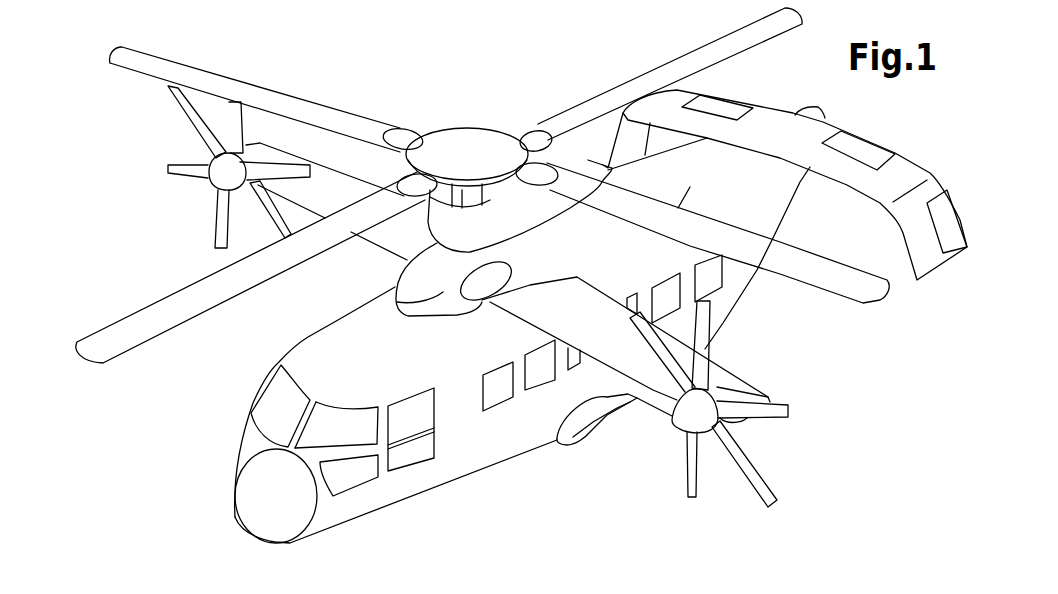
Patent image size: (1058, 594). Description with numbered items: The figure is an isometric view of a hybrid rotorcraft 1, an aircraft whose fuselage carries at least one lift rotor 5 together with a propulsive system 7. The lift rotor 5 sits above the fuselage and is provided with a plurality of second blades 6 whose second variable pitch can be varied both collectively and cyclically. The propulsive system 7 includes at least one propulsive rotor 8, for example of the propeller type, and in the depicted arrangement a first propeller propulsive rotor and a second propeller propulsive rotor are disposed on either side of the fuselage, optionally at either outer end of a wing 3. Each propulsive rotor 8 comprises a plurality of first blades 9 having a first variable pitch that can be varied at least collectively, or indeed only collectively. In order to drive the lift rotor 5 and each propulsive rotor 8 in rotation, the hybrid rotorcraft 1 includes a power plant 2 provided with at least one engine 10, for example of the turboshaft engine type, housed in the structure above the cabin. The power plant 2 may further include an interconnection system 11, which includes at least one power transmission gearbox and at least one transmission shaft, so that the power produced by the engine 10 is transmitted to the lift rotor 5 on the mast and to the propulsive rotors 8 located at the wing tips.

The hybrid rotorcraft 1 is at (582, 476).
The power plant 2 is at (475, 307).
The wing 3 is at (390, 257).
The lift rotor 5 is at (465, 88).
The second blades 6 is at (137, 325).
The propulsive system 7 is at (793, 518).
The propulsive rotor 8 is at (175, 137).
The first blades 9 is at (193, 175).
The engine 10 is at (483, 280).
The interconnection system 11 is at (458, 195).